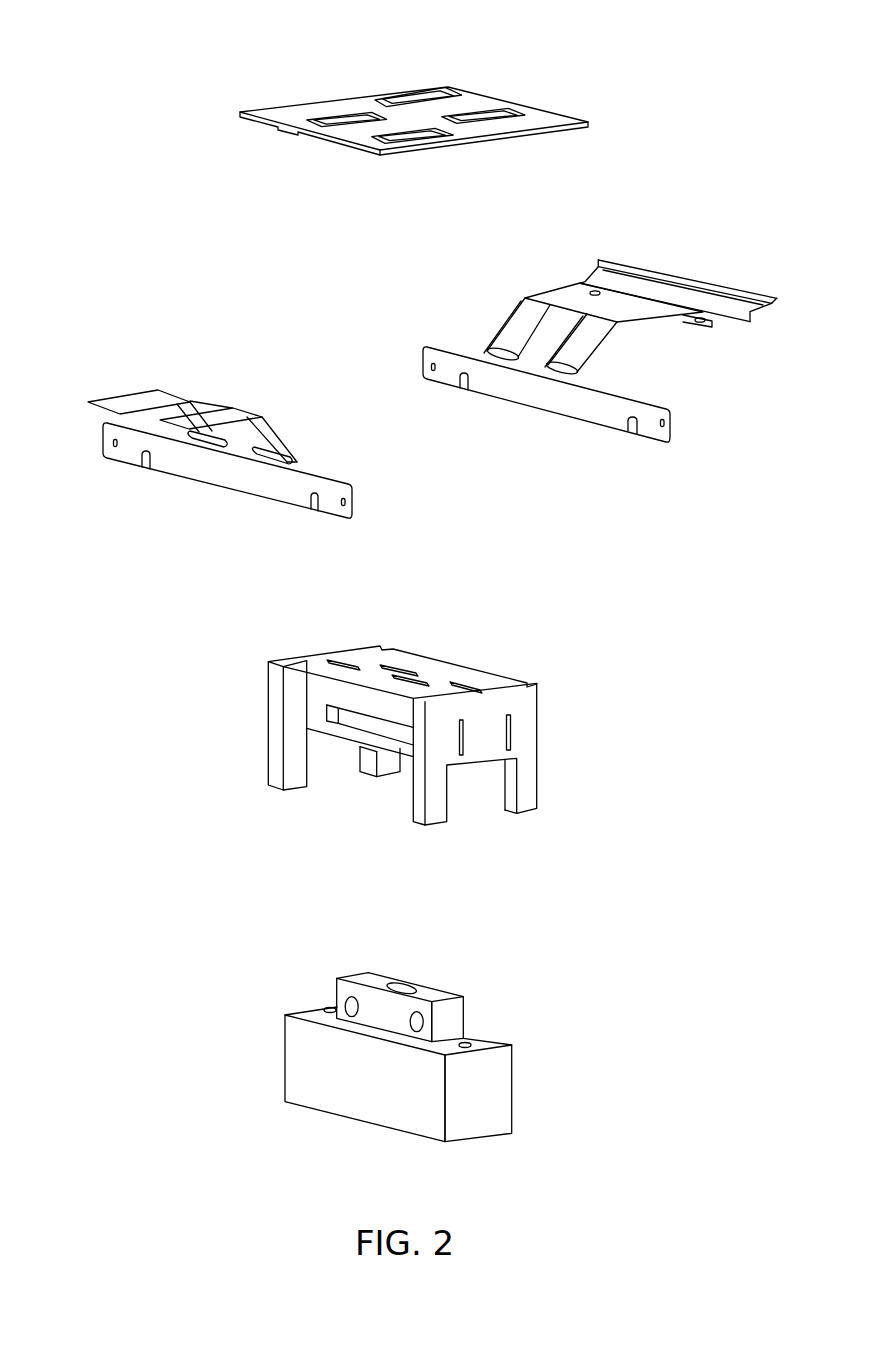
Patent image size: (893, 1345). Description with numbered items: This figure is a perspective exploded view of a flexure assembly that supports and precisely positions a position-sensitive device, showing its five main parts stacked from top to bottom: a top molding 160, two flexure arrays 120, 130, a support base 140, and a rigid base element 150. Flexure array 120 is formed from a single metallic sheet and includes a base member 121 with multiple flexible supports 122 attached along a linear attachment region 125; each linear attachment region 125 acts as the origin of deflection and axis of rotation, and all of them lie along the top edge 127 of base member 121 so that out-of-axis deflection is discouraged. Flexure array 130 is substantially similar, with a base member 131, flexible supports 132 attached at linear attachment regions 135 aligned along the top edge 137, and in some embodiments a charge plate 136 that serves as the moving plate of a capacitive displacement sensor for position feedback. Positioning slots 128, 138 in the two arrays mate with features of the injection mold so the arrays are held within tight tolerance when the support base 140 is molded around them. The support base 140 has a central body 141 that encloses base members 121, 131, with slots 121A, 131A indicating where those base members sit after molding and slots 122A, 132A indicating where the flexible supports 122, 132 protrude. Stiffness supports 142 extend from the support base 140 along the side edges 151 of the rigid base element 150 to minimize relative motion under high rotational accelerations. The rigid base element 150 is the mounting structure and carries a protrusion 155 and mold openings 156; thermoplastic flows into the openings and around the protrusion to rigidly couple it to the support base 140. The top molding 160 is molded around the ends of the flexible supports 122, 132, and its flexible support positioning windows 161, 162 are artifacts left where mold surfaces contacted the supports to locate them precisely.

The flexure array 120 is at (108, 364).
The base member 121 is at (224, 474).
The flexible supports 122 is at (197, 406).
The linear attachment region 125 is at (160, 422).
The top edge 127 is at (332, 475).
The positioning slots 128 is at (146, 470).
The flexure array 130 is at (508, 286).
The base member 131 is at (549, 399).
The flexible supports 132 is at (508, 325).
The linear attachment region 135 is at (488, 345).
The charge plate 136 is at (730, 282).
The top edge 137 is at (657, 403).
The positioning slots 138 is at (464, 396).
The support base 140 is at (486, 634).
The slot 121A is at (512, 742).
The slots 122A is at (412, 662).
The slot 131A is at (467, 745).
The slots 132A is at (345, 658).
The body 141 is at (498, 726).
The stiffness supports 142 is at (265, 765).
The rigid base element 150 is at (392, 1091).
The side edges 151 is at (517, 1083).
The protrusion 155 is at (468, 1017).
The mold openings 156 is at (398, 987).
The top molding 160 is at (414, 106).
The flexible support positioning windows 161 is at (338, 111).
The flexible support positioning windows 162 is at (416, 82).